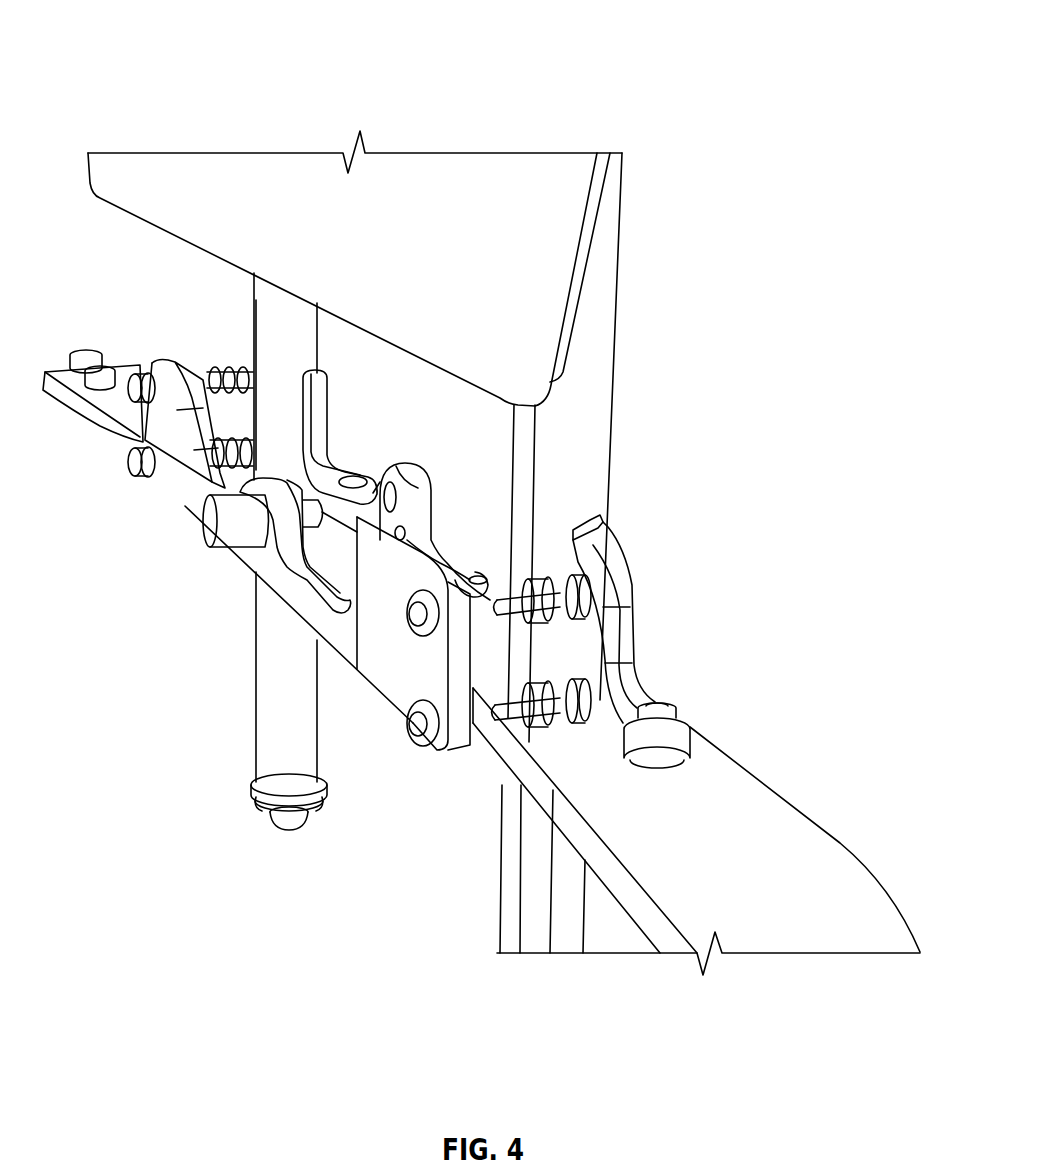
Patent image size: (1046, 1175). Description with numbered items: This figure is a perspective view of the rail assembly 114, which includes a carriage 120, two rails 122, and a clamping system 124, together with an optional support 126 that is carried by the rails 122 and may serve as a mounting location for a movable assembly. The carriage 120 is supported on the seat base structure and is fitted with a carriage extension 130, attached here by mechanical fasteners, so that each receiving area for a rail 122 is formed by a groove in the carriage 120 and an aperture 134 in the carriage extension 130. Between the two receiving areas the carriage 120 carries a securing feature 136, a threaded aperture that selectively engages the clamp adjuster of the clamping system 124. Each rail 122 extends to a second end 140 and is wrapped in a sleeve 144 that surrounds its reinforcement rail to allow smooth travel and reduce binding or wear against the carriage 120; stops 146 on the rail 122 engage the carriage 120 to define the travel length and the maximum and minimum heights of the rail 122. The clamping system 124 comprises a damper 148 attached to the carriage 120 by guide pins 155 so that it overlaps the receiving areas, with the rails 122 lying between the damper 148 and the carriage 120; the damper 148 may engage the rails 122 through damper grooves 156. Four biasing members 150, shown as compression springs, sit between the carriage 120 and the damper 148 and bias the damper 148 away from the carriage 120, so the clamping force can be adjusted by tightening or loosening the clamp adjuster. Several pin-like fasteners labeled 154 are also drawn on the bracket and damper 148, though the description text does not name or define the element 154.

The rail assembly 114 is at (118, 36).
The carriage 120 is at (328, 427).
The rail 122 is at (596, 394).
The clamping system 124 is at (98, 284).
The support 126 is at (462, 166).
The carriage extension 130 is at (833, 867).
The aperture 134 is at (476, 748).
The securing feature 136 is at (393, 480).
The second end 140 is at (297, 827).
The sleeve 144 is at (590, 488).
The stop 146 is at (253, 807).
The damper 148 is at (347, 630).
The biasing member 150 is at (233, 362).
The pin 154 is at (213, 457).
The guide pin 155 is at (128, 385).
The damper groove 156 is at (203, 380).